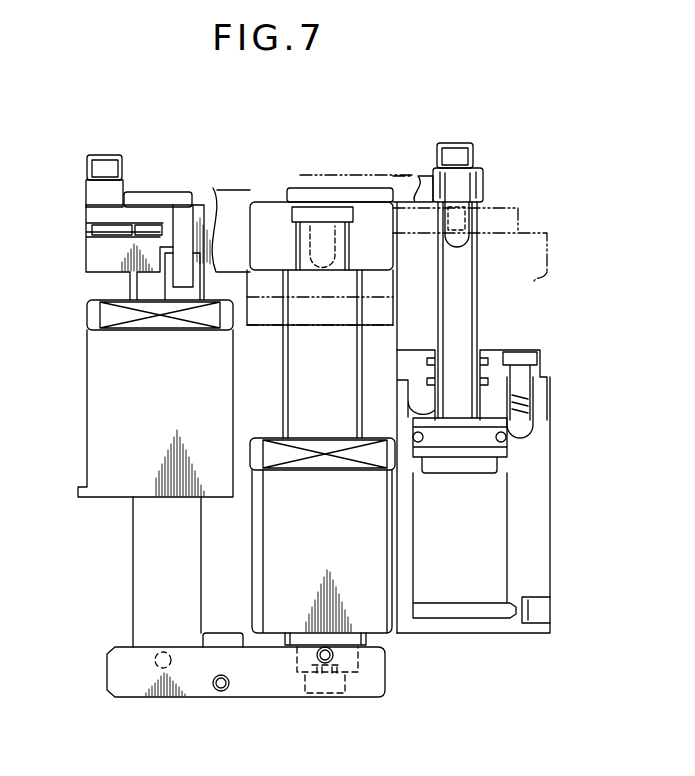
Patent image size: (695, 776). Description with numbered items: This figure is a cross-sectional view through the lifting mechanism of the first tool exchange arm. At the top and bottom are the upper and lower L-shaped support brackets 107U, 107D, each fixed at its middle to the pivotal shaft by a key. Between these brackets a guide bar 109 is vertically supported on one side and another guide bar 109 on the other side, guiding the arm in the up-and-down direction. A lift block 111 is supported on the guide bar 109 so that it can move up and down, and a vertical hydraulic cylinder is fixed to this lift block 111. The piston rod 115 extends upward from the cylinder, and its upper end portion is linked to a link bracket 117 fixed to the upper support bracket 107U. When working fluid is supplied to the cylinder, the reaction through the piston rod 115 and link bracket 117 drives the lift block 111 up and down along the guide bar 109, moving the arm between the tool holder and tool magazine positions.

The upper L-shaped support bracket 107U is at (245, 192).
The lower L-shaped support bracket 107D is at (250, 688).
The link bracket 117 is at (96, 195).
The piston rod 115 is at (465, 292).
The guide bar 109 is at (338, 390).
The lift block 111 is at (172, 394).